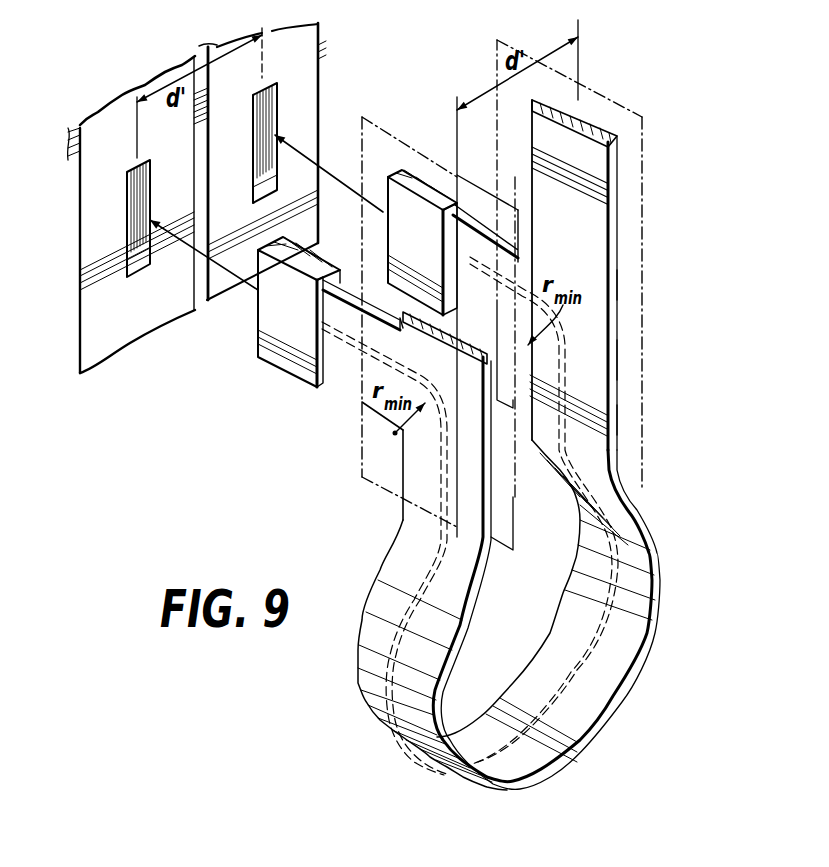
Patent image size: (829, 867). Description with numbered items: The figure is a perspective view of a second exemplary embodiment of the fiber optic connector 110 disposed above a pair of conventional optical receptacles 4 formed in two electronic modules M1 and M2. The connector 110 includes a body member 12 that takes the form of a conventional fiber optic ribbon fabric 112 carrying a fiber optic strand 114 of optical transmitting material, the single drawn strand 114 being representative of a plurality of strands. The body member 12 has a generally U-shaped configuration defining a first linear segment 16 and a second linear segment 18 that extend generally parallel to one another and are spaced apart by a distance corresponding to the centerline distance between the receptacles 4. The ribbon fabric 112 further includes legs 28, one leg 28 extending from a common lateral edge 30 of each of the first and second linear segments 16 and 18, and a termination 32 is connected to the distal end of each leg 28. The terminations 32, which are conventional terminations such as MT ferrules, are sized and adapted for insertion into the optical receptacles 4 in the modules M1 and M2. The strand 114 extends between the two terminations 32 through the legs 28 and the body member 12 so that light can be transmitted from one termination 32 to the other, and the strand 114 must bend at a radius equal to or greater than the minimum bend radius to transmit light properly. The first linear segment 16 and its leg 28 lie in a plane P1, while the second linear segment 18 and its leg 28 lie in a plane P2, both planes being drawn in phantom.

The optical receptacle 4 is at (130, 186).
The body member 12 is at (587, 252).
The first linear segment 16 is at (463, 493).
The second linear segment 18 is at (598, 177).
The leg 28 is at (350, 378).
The lateral edge 30 is at (403, 311).
The termination 32 is at (293, 311).
The fiber optic connector 110 is at (688, 357).
The fiber optic ribbon fabric 112 is at (619, 287).
The fiber optic strand 114 is at (615, 420).
The electronic module M1 is at (80, 172).
The electronic module M2 is at (307, 67).
The plane P1 is at (361, 472).
The plane P2 is at (643, 487).